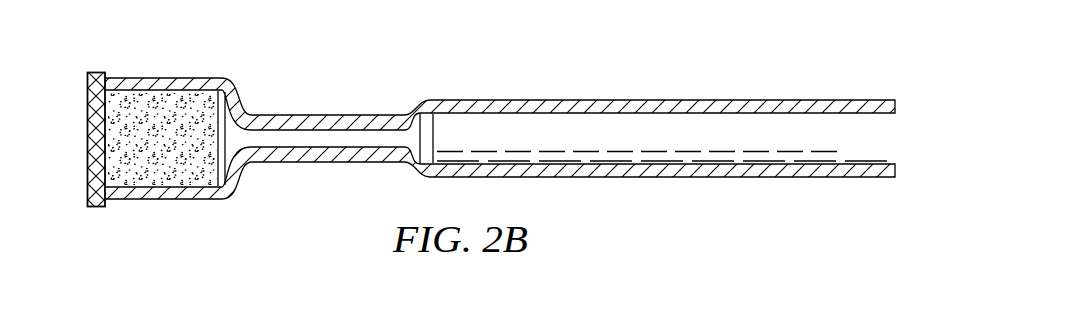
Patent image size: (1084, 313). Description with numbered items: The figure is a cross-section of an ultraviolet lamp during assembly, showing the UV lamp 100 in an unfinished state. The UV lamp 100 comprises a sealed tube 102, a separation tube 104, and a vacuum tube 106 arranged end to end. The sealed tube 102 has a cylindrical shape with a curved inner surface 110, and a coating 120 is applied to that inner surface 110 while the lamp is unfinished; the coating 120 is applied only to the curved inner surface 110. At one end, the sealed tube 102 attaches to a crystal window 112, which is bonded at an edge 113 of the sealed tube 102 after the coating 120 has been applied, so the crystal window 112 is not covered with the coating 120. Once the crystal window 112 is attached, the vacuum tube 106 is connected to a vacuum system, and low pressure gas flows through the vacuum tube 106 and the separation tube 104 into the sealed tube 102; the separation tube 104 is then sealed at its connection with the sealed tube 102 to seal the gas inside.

The UV lamp 100 is at (461, 124).
The sealed tube 102 is at (166, 131).
The separation tube 104 is at (339, 163).
The vacuum tube 106 is at (763, 178).
The inner surface 110 is at (198, 199).
The crystal window 112 is at (87, 124).
The edge 113 is at (108, 74).
The coating 120 is at (160, 146).